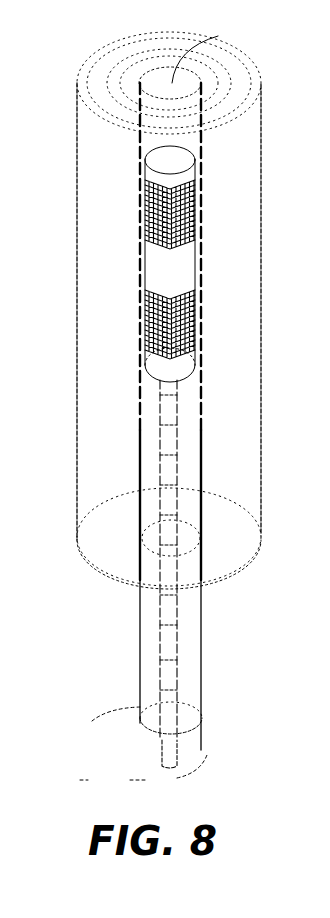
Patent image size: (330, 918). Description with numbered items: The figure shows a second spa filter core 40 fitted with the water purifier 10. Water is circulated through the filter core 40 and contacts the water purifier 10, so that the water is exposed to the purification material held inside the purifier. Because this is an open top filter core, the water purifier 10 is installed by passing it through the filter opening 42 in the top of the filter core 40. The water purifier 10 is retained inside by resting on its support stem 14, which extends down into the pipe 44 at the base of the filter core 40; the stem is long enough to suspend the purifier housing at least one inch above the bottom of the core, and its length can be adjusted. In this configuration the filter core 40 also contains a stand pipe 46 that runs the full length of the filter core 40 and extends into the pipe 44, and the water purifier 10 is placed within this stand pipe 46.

The water purifier 10 is at (145, 270).
The support stem 14 is at (180, 644).
The spa filter core 40 is at (245, 252).
The filter opening 42 is at (211, 50).
The pipe 44 is at (207, 755).
The stand pipe 46 is at (204, 740).